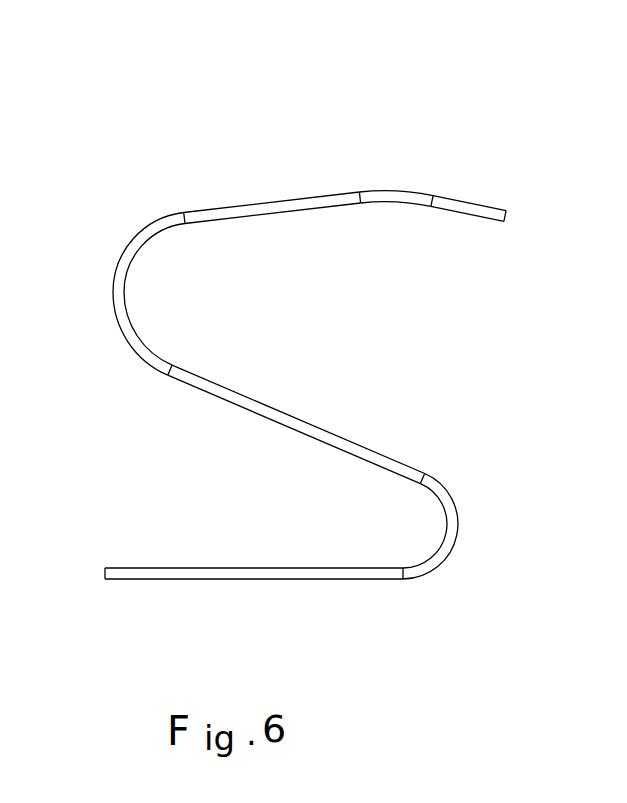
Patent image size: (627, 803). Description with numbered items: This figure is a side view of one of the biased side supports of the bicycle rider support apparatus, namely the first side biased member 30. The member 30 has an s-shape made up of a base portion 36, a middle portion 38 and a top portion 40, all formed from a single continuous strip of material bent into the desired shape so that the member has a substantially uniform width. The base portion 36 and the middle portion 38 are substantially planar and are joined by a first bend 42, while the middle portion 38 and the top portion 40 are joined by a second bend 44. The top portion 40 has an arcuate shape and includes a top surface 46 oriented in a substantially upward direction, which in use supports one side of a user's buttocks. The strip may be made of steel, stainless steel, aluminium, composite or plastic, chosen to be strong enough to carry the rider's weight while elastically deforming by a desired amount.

The first side biased member 30 is at (444, 102).
The base portion 36 is at (212, 565).
The middle portion 38 is at (365, 445).
The top portion 40 is at (500, 207).
The first bend 42 is at (458, 530).
The second bend 44 is at (115, 288).
The top surface 46 is at (445, 192).